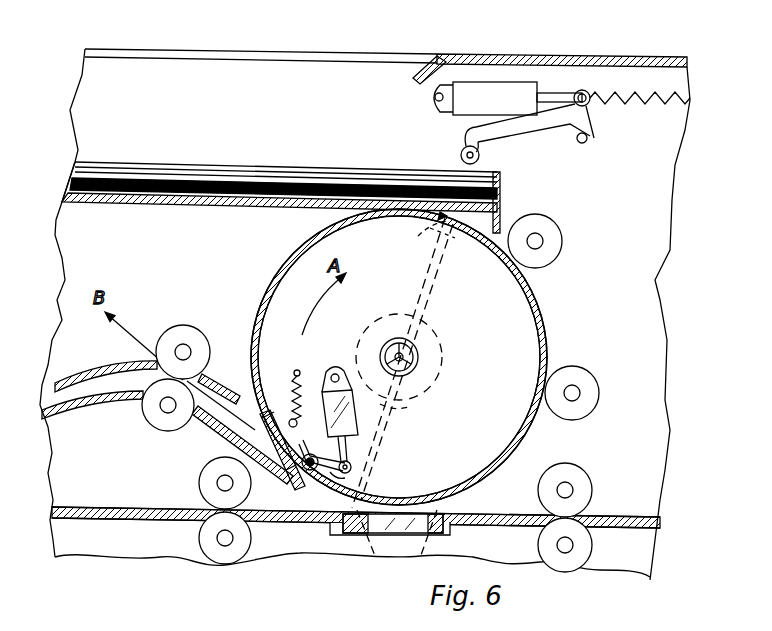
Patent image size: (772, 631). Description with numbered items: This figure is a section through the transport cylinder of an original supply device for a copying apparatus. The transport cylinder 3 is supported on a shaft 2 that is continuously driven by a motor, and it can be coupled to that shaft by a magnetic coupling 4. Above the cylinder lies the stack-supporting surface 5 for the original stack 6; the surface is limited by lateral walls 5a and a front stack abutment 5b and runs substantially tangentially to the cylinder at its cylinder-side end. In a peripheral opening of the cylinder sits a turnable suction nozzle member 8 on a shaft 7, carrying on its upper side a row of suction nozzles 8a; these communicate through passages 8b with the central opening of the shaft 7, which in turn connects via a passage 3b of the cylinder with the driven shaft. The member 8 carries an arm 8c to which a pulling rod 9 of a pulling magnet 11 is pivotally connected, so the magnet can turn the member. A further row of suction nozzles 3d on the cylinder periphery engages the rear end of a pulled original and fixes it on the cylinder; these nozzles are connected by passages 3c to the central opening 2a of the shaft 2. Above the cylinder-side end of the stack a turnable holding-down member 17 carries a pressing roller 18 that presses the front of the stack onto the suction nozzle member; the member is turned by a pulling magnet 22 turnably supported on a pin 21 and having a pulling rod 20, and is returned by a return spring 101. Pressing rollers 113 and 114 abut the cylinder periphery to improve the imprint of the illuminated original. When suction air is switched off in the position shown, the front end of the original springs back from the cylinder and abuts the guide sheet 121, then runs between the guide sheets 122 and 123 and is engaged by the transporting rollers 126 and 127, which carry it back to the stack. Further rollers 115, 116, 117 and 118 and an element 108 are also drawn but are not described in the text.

The shaft 2 is at (428, 342).
The central opening of the shaft 2a is at (412, 362).
The transport cylinder 3 is at (538, 323).
The passage of the transport cylinder 3b is at (402, 405).
The passages 3c is at (448, 270).
The further row of suction nozzles 3d is at (402, 360).
The magnetic coupling 4 is at (440, 347).
The stack-supporting surface 5 is at (138, 205).
The lateral walls 5a is at (146, 162).
The front stack abutment 5b is at (500, 178).
The original stack 6 is at (237, 165).
The shaft 7 is at (310, 472).
The suction nozzle member 8 is at (312, 430).
The row of suction nozzles 8a is at (282, 420).
The passages 8b is at (288, 478).
The arm 8c is at (340, 477).
The pulling rod 9 is at (350, 452).
The pulling magnet 11 is at (358, 432).
The holding-down member 17 is at (553, 146).
The pressing roller 18 is at (462, 150).
The pulling rod 20 is at (553, 93).
The pin 21 is at (445, 85).
The pulling magnet 22 is at (484, 90).
The return spring 101 is at (640, 106).
The pin 108 is at (589, 141).
The pressing roller 113 is at (553, 239).
The pressing roller 114 is at (580, 378).
The roller 115 is at (585, 548).
The roller 116 is at (583, 480).
The roller 117 is at (200, 538).
The roller 118 is at (200, 483).
The guide sheet 121 is at (257, 467).
The guide sheet 122 is at (103, 370).
The guide sheet 123 is at (93, 400).
The transport roller 126 is at (152, 420).
The transport roller 127 is at (181, 330).